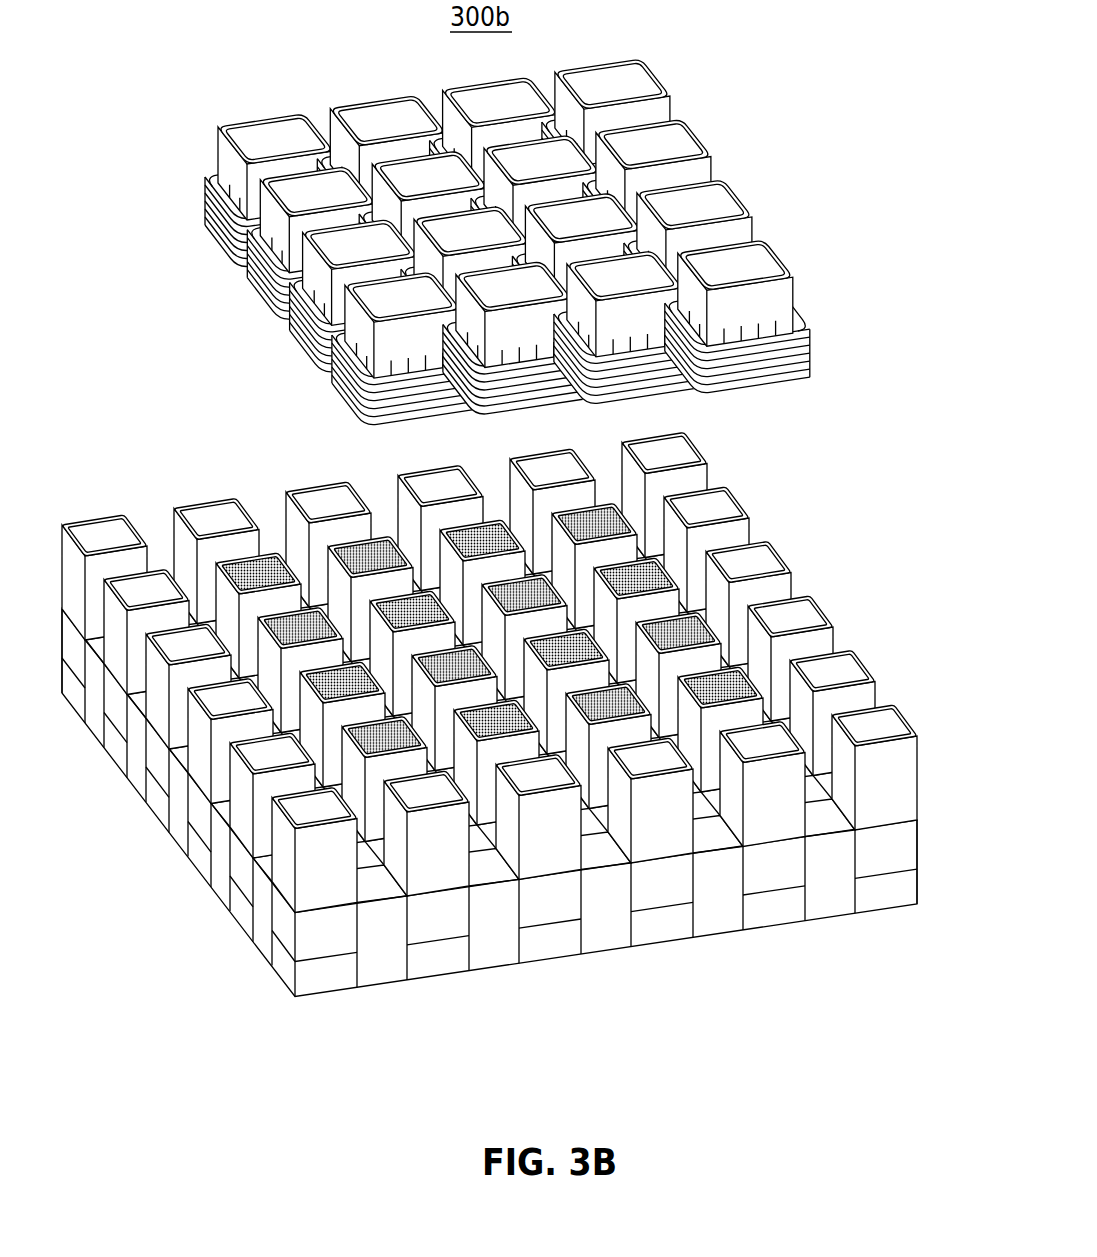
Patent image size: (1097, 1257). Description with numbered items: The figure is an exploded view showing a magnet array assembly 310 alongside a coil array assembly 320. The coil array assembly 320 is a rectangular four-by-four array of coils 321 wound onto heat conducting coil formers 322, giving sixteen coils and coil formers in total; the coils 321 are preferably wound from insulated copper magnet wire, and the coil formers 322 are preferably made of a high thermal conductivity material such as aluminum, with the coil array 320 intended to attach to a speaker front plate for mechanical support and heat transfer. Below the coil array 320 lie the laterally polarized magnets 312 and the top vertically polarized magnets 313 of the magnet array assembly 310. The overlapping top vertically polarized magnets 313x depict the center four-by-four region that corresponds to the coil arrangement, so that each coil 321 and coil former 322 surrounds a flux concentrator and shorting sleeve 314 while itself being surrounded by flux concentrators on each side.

The magnet array assembly 310 is at (708, 955).
The laterally polarized magnets 312 is at (375, 978).
The top vertically polarized magnets 313 is at (716, 512).
The overlapping top vertically polarized magnets 313x is at (745, 690).
The shorting sleeve 314 is at (248, 800).
The coil array assembly 320 is at (266, 338).
The coils 321 is at (812, 372).
The coil formers 322 is at (795, 305).